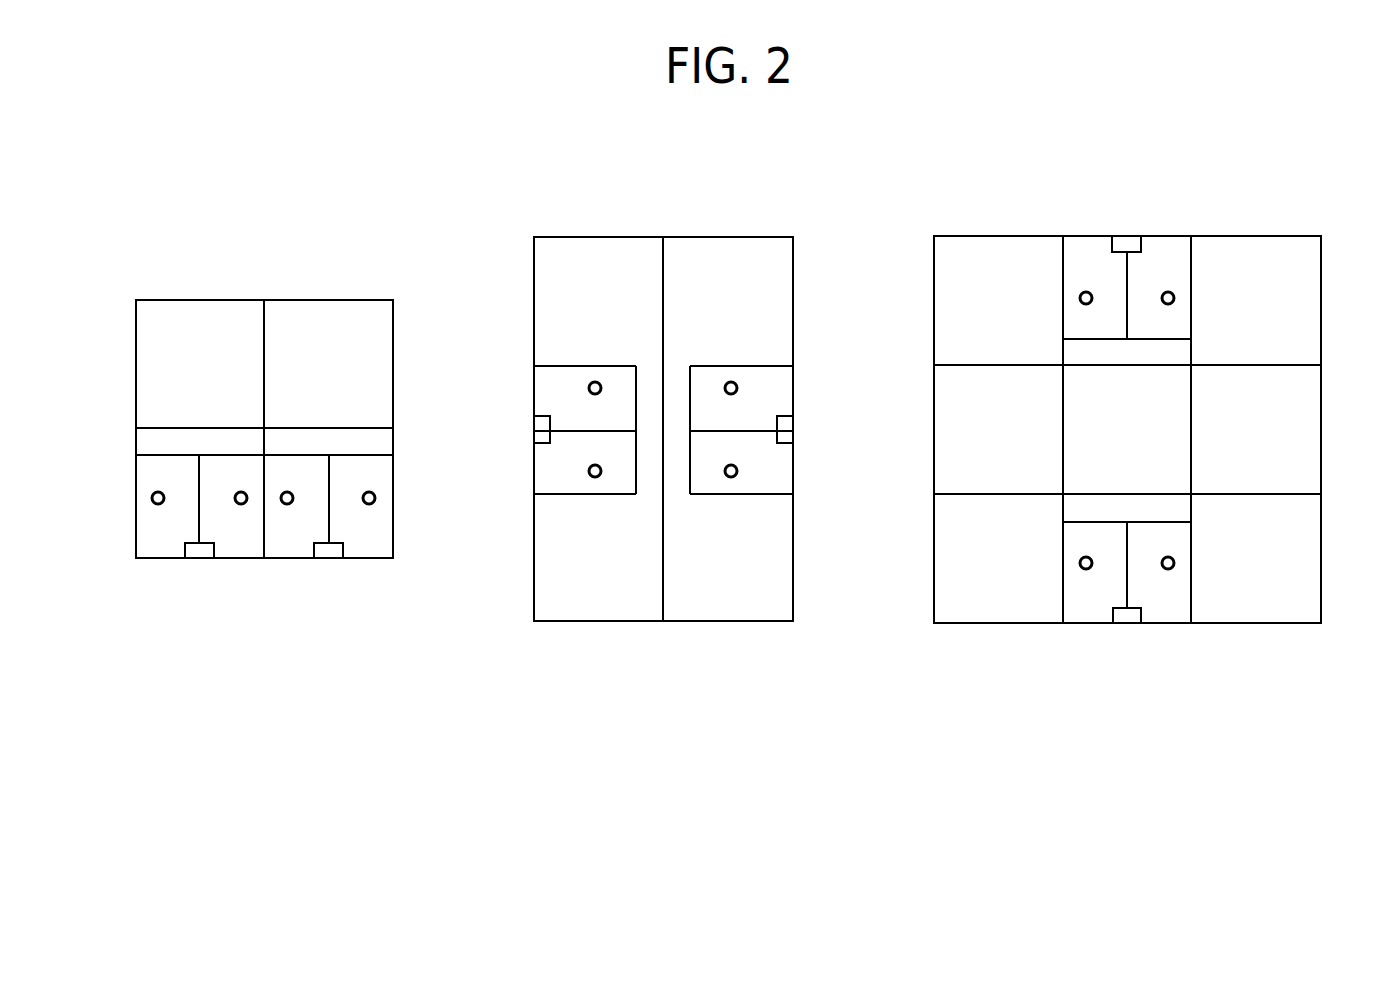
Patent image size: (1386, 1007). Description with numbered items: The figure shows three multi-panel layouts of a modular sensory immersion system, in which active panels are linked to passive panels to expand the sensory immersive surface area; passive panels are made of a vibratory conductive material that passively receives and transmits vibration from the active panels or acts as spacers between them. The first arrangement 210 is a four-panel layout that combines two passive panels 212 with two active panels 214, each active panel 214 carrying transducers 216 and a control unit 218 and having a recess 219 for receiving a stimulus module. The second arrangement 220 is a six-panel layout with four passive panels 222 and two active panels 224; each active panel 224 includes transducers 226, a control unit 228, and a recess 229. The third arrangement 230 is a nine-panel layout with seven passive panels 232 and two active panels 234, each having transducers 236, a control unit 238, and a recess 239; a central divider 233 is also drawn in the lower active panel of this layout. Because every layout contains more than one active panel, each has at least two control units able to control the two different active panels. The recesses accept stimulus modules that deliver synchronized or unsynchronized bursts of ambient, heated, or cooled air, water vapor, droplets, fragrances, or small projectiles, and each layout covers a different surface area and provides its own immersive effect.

The first arrangement 210 is at (176, 252).
The passive panel 212 is at (170, 368).
The active panel 214 is at (160, 473).
The transducer 216 is at (157, 506).
The control unit 218 is at (196, 552).
The recess 219 is at (160, 444).
The second arrangement 220 is at (546, 196).
The passive panel 222 is at (606, 263).
The active panel 224 is at (582, 408).
The transducer 226 is at (588, 387).
The control unit 228 is at (533, 430).
The recess 229 is at (650, 468).
The third arrangement 230 is at (959, 198).
The passive panel 232 is at (968, 303).
The lower central divider 233 is at (1147, 575).
The active panel 234 is at (1146, 283).
The transducer 236 is at (1087, 288).
The control unit 238 is at (1126, 243).
The recess 239 is at (1160, 353).